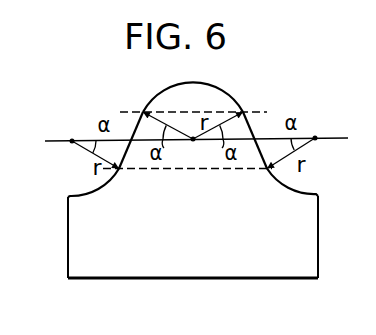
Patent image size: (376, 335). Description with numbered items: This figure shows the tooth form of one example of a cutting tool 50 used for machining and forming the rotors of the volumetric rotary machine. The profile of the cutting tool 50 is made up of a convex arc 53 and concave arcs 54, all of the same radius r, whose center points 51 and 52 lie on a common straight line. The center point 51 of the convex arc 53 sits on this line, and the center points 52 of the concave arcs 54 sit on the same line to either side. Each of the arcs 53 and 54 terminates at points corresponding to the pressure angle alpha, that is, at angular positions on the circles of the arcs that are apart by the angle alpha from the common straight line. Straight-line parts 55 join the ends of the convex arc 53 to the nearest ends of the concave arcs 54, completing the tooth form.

The cutting tool 50 is at (203, 264).
The center point of convex arc 51 is at (194, 152).
The center point of concave arc 52 is at (197, 128).
The convex arc 53 is at (217, 86).
The concave arc 54 is at (88, 193).
The straight-line part 55 is at (134, 131).